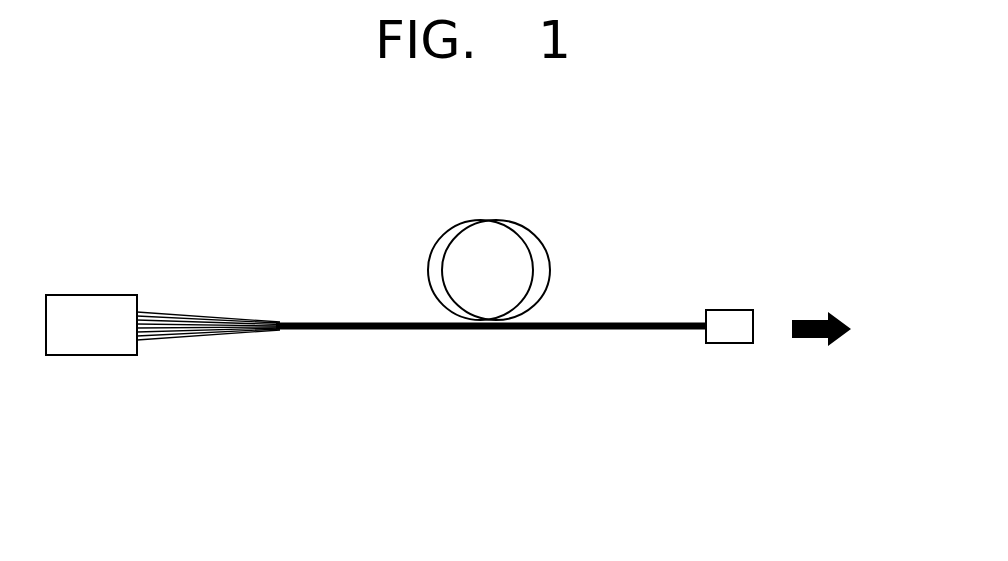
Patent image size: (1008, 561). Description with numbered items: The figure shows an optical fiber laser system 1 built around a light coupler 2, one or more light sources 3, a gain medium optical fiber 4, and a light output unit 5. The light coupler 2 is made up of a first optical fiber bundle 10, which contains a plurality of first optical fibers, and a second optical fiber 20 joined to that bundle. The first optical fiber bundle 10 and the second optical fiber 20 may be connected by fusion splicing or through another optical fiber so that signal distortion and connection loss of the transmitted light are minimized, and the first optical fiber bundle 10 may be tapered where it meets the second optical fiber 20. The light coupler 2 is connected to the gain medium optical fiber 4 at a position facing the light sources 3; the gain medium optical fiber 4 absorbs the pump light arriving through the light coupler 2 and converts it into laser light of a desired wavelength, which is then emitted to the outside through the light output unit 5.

The optical fiber laser system 1 is at (726, 172).
The light coupler 2 is at (362, 237).
The light source 3 is at (92, 295).
The gain medium optical fiber 4 is at (503, 219).
The light output unit 5 is at (727, 310).
The first optical fiber bundle 10 is at (178, 312).
The second optical fiber 20 is at (360, 320).